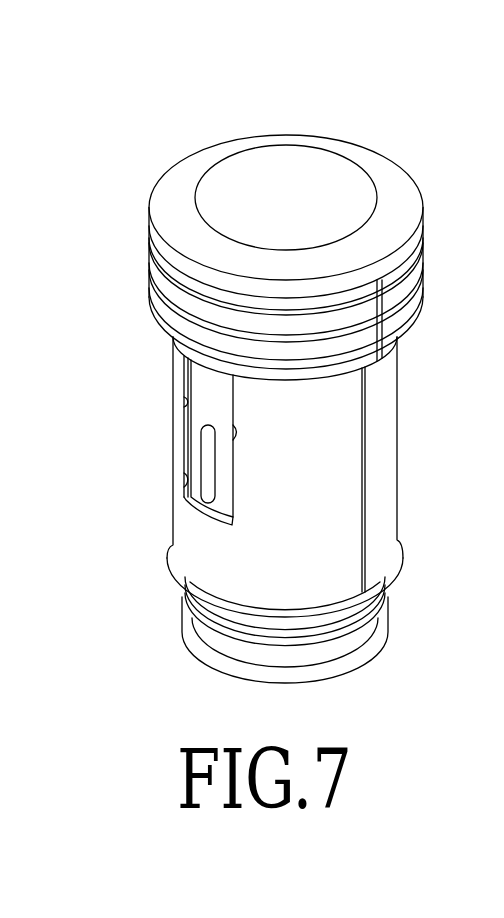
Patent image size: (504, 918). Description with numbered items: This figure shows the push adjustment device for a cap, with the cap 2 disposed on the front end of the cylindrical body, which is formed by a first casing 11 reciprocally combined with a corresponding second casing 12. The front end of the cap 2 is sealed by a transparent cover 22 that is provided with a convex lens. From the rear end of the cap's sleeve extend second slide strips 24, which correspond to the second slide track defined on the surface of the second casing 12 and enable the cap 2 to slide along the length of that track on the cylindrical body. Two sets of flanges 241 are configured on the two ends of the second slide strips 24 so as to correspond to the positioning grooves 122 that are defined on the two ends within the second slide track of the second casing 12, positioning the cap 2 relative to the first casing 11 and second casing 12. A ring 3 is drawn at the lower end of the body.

The cap 2 is at (388, 205).
The transparent cover 22 is at (317, 183).
The first casing 11 is at (378, 492).
The second casing 12 is at (190, 553).
The second slide strips 24 is at (203, 390).
The flanges 241 is at (187, 475).
The positioning grooves 122 is at (188, 398).
The ring 3 is at (348, 647).